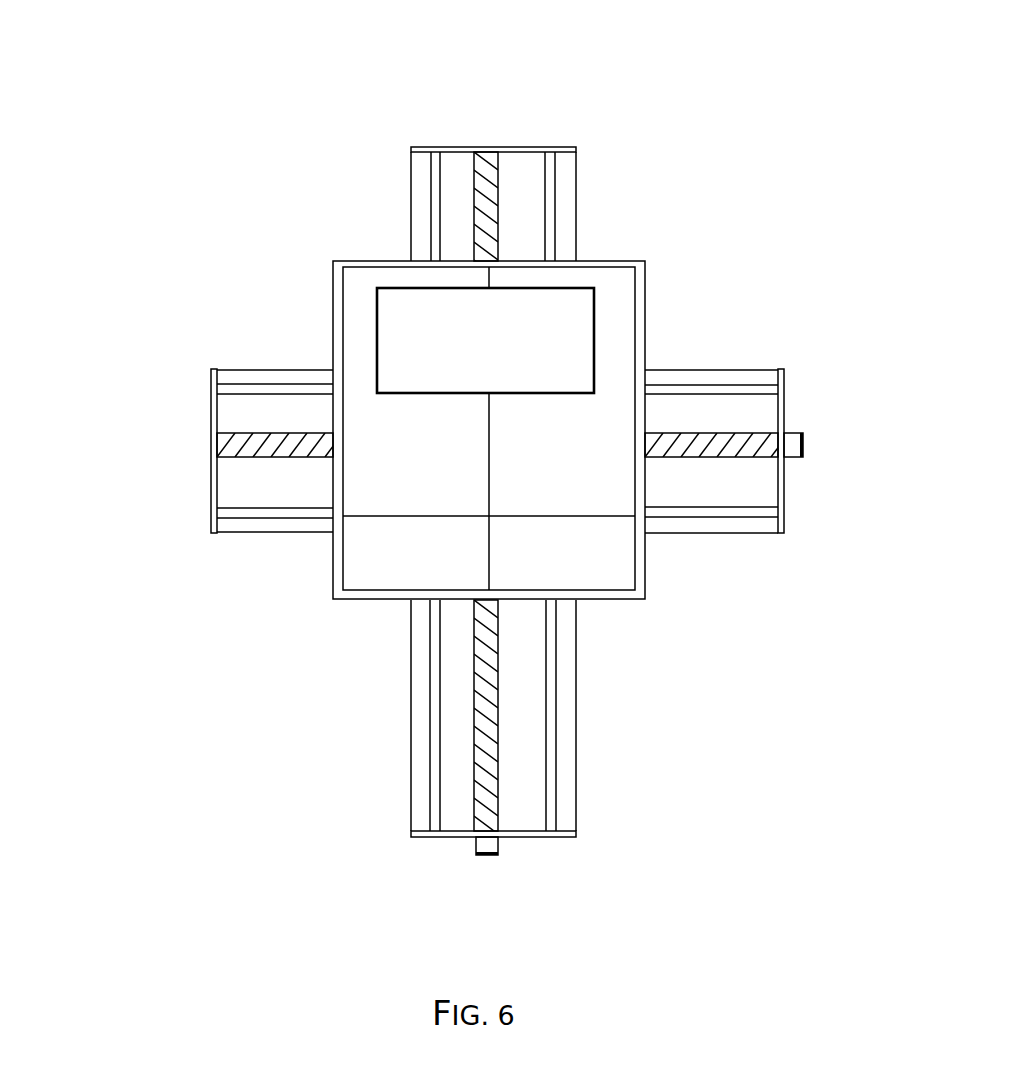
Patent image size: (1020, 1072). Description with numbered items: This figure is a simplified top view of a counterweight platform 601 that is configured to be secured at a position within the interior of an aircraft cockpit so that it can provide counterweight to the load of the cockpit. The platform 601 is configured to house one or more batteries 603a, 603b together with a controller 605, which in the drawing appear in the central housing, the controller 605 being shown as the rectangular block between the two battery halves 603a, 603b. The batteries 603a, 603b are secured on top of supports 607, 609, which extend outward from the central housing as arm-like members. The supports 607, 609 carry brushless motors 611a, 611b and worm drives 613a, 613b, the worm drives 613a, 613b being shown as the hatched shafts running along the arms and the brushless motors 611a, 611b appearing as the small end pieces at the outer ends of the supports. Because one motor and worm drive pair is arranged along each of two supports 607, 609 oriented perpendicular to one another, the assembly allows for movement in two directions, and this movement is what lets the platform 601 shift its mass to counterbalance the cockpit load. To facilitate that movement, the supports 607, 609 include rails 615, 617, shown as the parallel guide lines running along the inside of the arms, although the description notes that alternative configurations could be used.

The counterweight platform 601 is at (123, 88).
The battery 603a is at (340, 323).
The battery 603b is at (634, 315).
The controller 605 is at (573, 287).
The support 607 is at (700, 533).
The support 609 is at (577, 693).
The brushless motor 611a is at (498, 843).
The brushless motor 611b is at (793, 432).
The worm drive 613a is at (498, 188).
The worm drive 613b is at (255, 432).
The rail 615 is at (274, 519).
The rail 617 is at (430, 690).